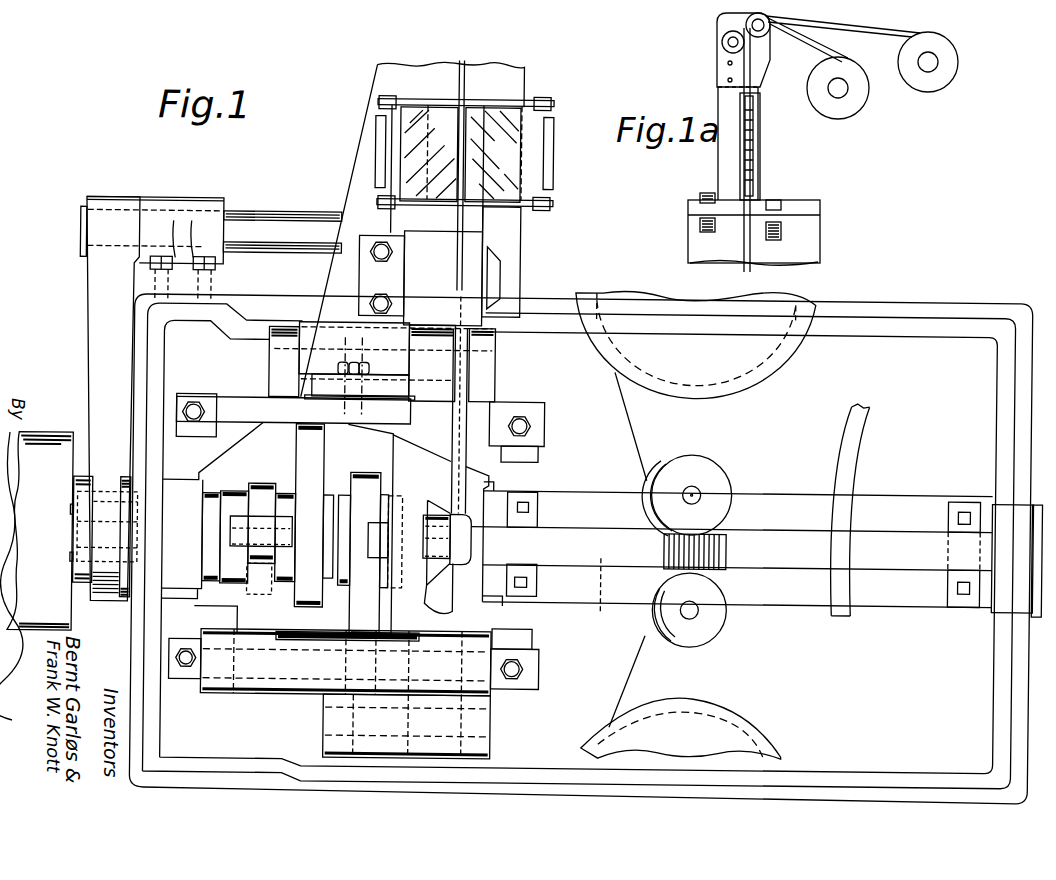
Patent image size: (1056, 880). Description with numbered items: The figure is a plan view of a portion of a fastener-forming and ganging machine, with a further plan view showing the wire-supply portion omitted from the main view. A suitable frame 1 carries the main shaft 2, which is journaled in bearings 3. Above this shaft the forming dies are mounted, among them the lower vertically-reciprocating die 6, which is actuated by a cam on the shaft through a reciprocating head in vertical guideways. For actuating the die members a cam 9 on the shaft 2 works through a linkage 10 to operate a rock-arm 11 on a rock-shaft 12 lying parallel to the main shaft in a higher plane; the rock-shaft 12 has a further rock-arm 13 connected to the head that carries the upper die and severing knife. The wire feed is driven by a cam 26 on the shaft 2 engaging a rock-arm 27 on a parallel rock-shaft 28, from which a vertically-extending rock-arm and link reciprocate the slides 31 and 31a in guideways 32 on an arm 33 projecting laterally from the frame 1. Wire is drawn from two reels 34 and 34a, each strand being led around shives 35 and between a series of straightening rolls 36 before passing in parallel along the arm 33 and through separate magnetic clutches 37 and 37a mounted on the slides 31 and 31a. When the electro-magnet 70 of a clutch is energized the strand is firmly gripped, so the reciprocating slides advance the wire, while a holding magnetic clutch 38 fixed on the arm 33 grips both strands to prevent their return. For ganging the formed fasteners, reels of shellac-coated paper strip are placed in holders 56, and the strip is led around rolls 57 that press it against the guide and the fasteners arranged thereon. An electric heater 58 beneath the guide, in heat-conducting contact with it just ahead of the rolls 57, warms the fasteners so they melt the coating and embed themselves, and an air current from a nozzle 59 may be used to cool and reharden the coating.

In FIG. 1, the frame 1 is at (931, 326).
In FIG. 1, the main shaft 2 is at (72, 540).
In FIG. 1, the bearings 3 is at (306, 531).
In FIG. 1, the lower vertically-reciprocating die 6 is at (448, 545).
In FIG. 1, the cam 9 is at (264, 495).
In FIG. 1, the linkage 10 is at (266, 540).
In FIG. 1, the rock-arm 11 is at (258, 612).
In FIG. 1, the rock-shaft 12 is at (310, 680).
In FIG. 1, the rock-arm 13 is at (428, 605).
In FIG. 1, the cam 26 is at (106, 592).
In FIG. 1, the rock-arm 27 is at (100, 334).
In FIG. 1, the rock-shaft 28 is at (278, 222).
In FIG. 1, the slide 31 is at (513, 177).
In FIG. 1, the slide 31a is at (404, 140).
In FIG. 1, the guideways 32 is at (515, 242).
In FIG. 1, the arm 33 is at (413, 230).
In FIG. 1A, the reel of wire 34 is at (860, 108).
In FIG. 1A, the reel of wire 34a is at (934, 91).
In FIG. 1A, the shives 35 is at (720, 43).
In FIG. 1A, the rolls 36 is at (760, 112).
In FIG. 1, the magnetic clutch 37 is at (523, 194).
In FIG. 1, the magnetic clutch 37a is at (403, 193).
In FIG. 1, the holding magnetic clutch 38 is at (443, 278).
In FIG. 1, the holders 56 is at (780, 367).
In FIG. 1, the rolls 57 is at (726, 482).
In FIG. 1, the electric heater 58 is at (550, 394).
In FIG. 1, the nozzle 59 is at (843, 590).
In FIG. 1, the electro-magnet 70 is at (50, 440).